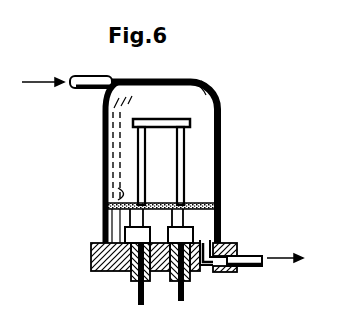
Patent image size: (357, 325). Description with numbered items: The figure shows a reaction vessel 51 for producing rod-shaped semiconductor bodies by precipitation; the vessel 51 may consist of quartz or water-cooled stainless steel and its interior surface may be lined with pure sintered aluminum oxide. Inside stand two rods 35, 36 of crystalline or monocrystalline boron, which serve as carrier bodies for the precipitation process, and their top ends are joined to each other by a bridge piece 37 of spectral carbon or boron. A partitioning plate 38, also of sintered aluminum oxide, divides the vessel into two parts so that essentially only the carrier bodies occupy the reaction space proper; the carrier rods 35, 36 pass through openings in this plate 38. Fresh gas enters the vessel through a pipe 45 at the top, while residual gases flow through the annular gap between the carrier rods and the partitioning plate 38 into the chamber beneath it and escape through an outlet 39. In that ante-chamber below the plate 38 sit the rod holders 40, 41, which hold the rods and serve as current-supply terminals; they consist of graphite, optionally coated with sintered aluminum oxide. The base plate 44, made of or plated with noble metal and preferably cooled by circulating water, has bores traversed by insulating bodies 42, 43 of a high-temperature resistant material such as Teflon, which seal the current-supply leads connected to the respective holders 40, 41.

The carrier rod 35 is at (185, 148).
The carrier rod 36 is at (137, 148).
The bridge piece 37 is at (169, 118).
The partitioning plate 38 is at (121, 148).
The outlet 39 is at (262, 266).
The rod holder 40 is at (129, 218).
The rod holder 41 is at (187, 214).
The insulating body 42 is at (136, 276).
The insulating body 43 is at (177, 276).
The base plate 44 is at (100, 273).
The pipe 45 is at (92, 80).
The reaction vessel 51 is at (221, 123).